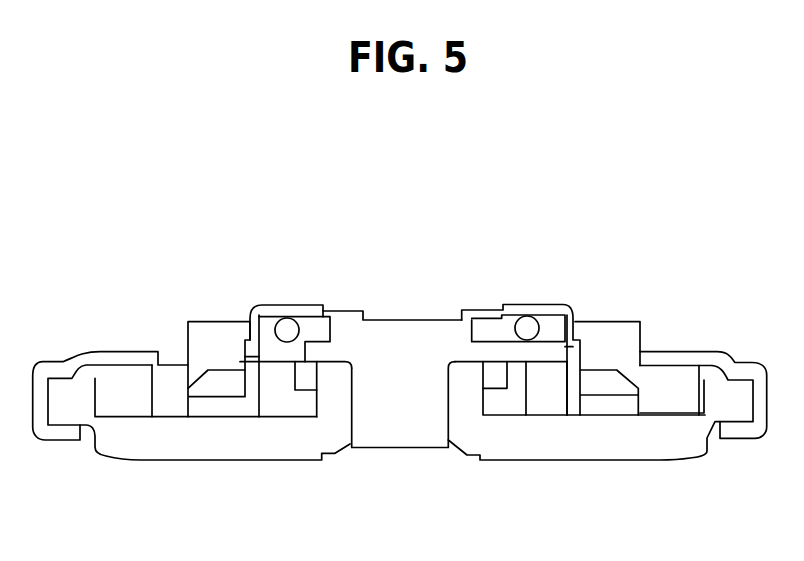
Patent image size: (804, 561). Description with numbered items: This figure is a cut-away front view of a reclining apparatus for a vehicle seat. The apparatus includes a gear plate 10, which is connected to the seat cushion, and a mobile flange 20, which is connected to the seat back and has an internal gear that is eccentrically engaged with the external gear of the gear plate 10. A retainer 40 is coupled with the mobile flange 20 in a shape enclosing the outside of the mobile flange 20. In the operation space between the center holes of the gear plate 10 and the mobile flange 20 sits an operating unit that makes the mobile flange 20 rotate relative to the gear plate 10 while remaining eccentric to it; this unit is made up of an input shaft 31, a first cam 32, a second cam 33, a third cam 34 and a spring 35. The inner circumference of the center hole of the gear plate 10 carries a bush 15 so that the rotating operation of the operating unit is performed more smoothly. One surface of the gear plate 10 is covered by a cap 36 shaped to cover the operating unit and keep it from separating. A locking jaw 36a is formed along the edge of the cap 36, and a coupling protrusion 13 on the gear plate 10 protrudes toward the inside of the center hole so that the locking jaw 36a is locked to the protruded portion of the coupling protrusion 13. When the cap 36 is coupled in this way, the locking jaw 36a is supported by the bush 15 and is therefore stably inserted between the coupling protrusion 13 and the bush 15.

The gear plate 10 is at (670, 383).
The coupling protrusion 13 is at (603, 322).
The bush 15 is at (612, 407).
The mobile flange 20 is at (672, 437).
The input shaft 31 is at (405, 342).
The first cam 32 is at (493, 377).
The second cam 33 is at (507, 403).
The third cam 34 is at (548, 403).
The spring 35 is at (525, 323).
The cap 36 is at (542, 310).
The locking jaw 36a is at (570, 347).
The retainer 40 is at (748, 375).